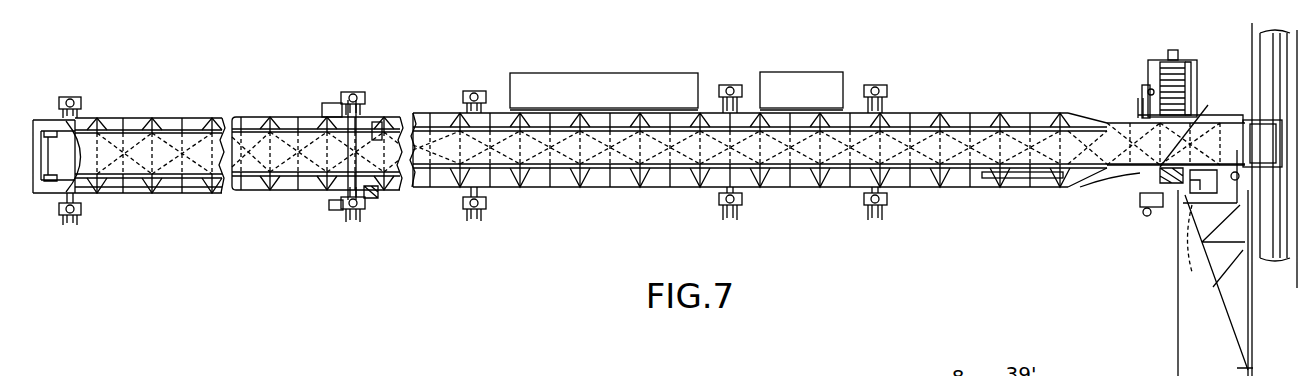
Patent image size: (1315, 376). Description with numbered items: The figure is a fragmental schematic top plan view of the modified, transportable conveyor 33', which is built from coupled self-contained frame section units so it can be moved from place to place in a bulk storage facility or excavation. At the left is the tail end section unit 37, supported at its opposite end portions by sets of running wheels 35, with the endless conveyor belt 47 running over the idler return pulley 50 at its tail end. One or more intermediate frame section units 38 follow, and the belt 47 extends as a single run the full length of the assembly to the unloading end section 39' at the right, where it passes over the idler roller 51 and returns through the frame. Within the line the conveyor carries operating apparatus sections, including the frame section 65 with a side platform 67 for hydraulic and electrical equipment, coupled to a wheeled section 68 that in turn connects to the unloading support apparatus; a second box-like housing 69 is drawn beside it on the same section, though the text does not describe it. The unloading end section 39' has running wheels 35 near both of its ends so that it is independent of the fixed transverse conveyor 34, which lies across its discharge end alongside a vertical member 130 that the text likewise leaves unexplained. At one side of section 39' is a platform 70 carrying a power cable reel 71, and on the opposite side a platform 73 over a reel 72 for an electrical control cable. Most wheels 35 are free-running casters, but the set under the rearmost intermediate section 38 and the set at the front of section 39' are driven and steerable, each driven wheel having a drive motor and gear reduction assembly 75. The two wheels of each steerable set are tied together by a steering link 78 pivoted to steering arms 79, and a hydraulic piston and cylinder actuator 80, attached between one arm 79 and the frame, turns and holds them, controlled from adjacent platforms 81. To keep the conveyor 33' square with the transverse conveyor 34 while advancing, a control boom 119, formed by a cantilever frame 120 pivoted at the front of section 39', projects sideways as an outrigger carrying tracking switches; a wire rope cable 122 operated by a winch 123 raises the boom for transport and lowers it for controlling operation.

The conveyor 33' is at (145, 120).
The transverse conveyor 34 is at (1282, 265).
The running wheels 35 is at (72, 226).
The tail end section unit 37 is at (181, 200).
The intermediate frame section units 38 is at (436, 197).
The unloading end section 39' is at (1118, 118).
The endless conveyor belt 47 is at (258, 160).
The idler return pulley 50 is at (52, 128).
The idler roller 51 is at (1257, 120).
The frame section 65 is at (606, 197).
The platform 67 is at (610, 88).
The wheeled section 68 is at (813, 197).
The housing box 69 is at (825, 82).
The platform 70 is at (1188, 72).
The power cable reel 71 is at (1152, 90).
The reel 72 is at (1215, 283).
The platform 73 is at (487, 205).
The drive motor and gear reduction assembly 75 is at (344, 100).
The steering link 78 is at (357, 124).
The steering arms 79 is at (1146, 86).
The hydraulic piston and cylinder actuator 80 is at (369, 196).
The platforms 81 is at (326, 103).
The control boom 119 is at (1200, 310).
The cantilever frame 120 is at (1230, 316).
The wire rope cable 122 is at (1231, 174).
The winch 123 is at (1224, 246).
The column 130 is at (1252, 298).